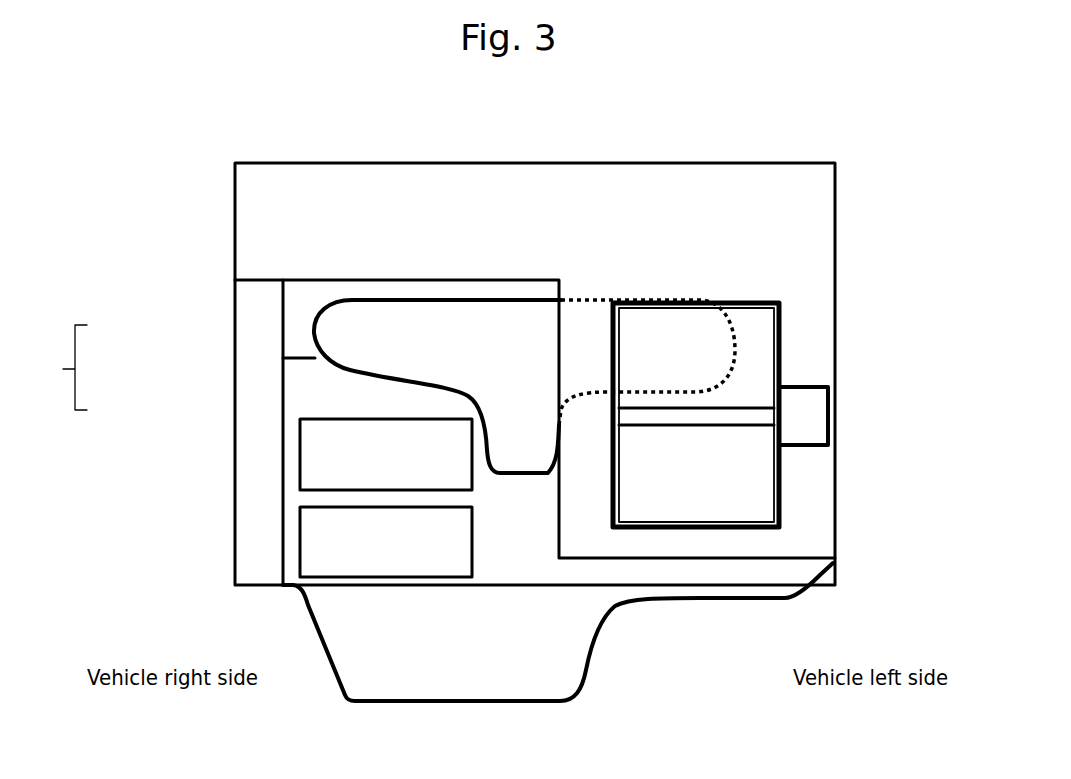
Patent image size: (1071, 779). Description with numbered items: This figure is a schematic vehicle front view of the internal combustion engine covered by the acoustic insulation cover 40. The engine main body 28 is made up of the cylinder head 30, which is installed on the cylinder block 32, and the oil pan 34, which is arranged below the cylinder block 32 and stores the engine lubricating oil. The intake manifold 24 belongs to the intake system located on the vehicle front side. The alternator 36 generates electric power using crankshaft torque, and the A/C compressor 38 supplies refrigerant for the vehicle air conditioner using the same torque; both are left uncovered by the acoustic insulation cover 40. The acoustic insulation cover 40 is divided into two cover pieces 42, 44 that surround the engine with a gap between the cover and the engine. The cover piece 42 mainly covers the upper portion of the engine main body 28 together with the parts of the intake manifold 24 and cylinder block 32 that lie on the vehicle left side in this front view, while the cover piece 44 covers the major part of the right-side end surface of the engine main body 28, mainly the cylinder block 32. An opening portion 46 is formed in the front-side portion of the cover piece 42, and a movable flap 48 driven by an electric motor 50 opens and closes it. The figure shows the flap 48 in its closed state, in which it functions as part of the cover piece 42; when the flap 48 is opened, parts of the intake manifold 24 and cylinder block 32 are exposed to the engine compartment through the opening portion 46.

The intake manifold 24 is at (338, 325).
The engine main body 28 is at (58, 367).
The cylinder head 30 is at (300, 344).
The cylinder block 32 is at (308, 388).
The oil pan 34 is at (362, 635).
The alternator 36 is at (430, 472).
The A/C compressor 38 is at (418, 547).
The acoustic insulation cover 40 is at (686, 127).
The cover piece 42 is at (483, 187).
The cover piece 44 is at (253, 488).
The opening portion 46 is at (780, 345).
The flap 48 is at (762, 382).
The electric motor 50 is at (830, 425).